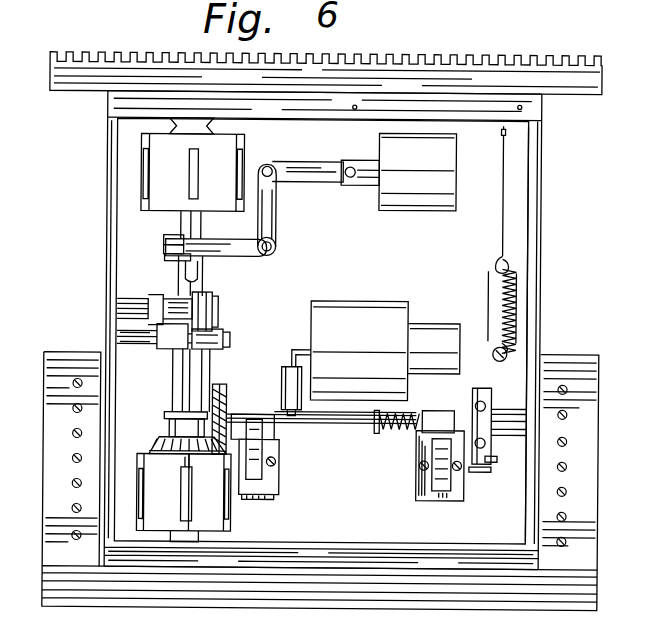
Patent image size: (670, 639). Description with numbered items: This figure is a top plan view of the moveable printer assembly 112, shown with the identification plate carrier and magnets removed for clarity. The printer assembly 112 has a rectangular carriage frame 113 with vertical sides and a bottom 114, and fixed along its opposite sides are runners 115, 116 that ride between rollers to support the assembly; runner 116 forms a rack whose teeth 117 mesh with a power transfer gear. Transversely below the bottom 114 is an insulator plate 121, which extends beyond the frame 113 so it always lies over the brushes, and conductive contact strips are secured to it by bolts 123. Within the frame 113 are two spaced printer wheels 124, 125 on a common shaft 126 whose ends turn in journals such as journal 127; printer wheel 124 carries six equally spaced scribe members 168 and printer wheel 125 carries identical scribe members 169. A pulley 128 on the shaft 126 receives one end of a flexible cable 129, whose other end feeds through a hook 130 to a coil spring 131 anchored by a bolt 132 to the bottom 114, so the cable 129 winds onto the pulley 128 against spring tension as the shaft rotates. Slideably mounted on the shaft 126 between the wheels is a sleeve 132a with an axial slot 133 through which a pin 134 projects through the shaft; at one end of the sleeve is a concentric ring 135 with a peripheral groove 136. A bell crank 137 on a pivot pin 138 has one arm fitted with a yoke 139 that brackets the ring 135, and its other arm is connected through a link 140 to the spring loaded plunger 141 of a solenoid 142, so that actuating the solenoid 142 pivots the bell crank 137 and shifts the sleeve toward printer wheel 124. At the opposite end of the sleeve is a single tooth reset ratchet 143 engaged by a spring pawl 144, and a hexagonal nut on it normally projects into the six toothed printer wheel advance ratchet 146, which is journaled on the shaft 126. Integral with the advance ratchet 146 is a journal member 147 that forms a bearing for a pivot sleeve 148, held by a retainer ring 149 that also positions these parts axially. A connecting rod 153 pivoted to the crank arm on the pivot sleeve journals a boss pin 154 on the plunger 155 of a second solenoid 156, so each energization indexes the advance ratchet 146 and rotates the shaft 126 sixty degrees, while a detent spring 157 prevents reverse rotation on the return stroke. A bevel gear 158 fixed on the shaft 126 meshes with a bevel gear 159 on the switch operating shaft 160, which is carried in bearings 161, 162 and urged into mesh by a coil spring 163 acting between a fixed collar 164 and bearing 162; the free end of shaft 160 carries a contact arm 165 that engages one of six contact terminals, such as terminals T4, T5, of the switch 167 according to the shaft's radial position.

The printer assembly 112 is at (104, 278).
The carriage frame 113 is at (540, 265).
The bottom 114 is at (524, 228).
The runner 115 is at (130, 604).
The runner 116 is at (84, 94).
The teeth 117 is at (80, 53).
The insulator plate 121 is at (598, 402).
The bolts 123 is at (72, 459).
The printer wheel 124 is at (140, 141).
The printer wheel 125 is at (232, 527).
The shaft 126 is at (162, 440).
The journal 127 is at (174, 538).
The pulley 128 is at (195, 136).
The flexible cable 129 is at (312, 124).
The hook 130 is at (499, 133).
The coil spring 131 is at (488, 288).
The bolt 132 is at (496, 361).
The sleeve 132a is at (206, 282).
The slot 133 is at (185, 274).
The pin 134 is at (172, 261).
The ring 135 is at (166, 238).
The peripheral groove 136 is at (164, 251).
The bell crank 137 is at (276, 232).
The pivot pin 138 is at (275, 254).
The yoke 139 is at (206, 245).
The link 140 is at (310, 172).
The spring loaded plunger 141 is at (370, 185).
The solenoid 142 is at (420, 210).
The single tooth reset ratchet 143 is at (216, 314).
The spring pawl 144 is at (126, 308).
The printer wheel advance ratchet 146 is at (226, 340).
The journal member 147 is at (170, 426).
The pivot sleeve 148 is at (210, 368).
The retainer ring 149 is at (166, 414).
The connecting rod 153 is at (282, 370).
The boss pin 154 is at (290, 354).
The plunger 155 is at (424, 330).
The solenoid 156 is at (358, 304).
The detent spring 157 is at (136, 344).
The bevel gear 158 is at (186, 458).
The bevel gear 159 is at (228, 416).
The switch operating shaft 160 is at (300, 426).
The bearing 161 is at (282, 482).
The bearing 162 is at (420, 478).
The coil spring 163 is at (412, 432).
The fixed collar 164 is at (374, 434).
The contact arm 165 is at (490, 471).
The switch 167 is at (496, 458).
The scribe members 168 is at (182, 496).
The scribe members 169 is at (188, 171).
The contact terminal T4 is at (487, 406).
The contact terminal T5 is at (487, 443).